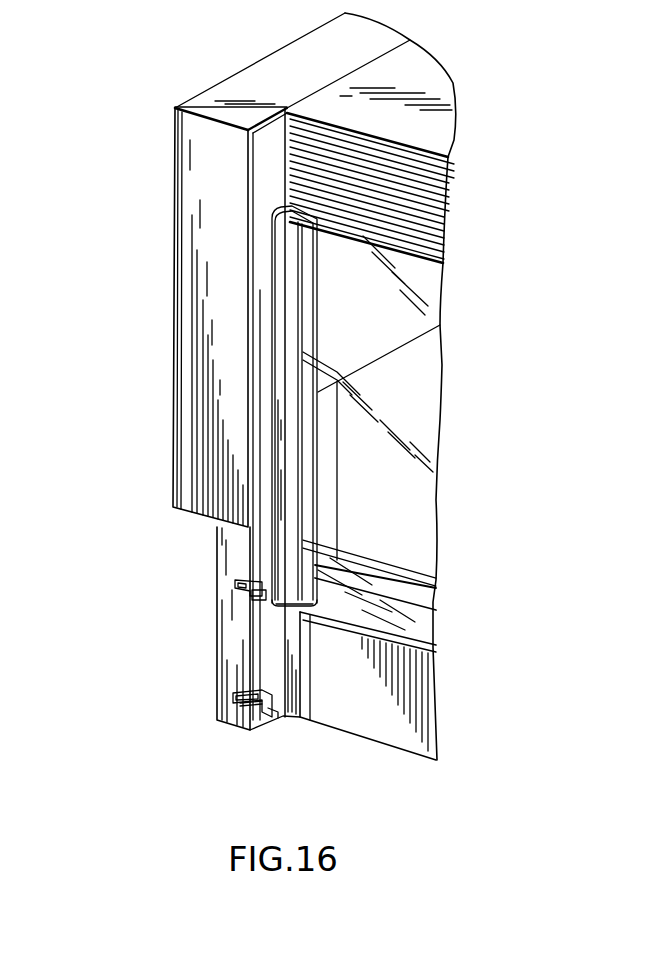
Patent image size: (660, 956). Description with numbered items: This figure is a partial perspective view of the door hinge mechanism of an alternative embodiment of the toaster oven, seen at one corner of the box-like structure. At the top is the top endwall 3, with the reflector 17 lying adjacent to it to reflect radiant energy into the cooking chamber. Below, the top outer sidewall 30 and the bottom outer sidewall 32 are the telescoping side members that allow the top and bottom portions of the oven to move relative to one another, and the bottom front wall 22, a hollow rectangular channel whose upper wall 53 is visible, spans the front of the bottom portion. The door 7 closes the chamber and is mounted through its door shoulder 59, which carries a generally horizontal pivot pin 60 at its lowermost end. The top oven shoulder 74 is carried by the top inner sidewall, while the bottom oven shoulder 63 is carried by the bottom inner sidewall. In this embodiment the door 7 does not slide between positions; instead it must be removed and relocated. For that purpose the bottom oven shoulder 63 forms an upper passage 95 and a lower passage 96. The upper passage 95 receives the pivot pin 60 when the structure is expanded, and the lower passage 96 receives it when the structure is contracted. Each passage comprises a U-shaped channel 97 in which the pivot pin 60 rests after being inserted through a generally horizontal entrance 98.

The top endwall 3 is at (453, 83).
The door 7 is at (442, 365).
The reflector 17 is at (448, 190).
The bottom front wall 22 is at (437, 733).
The top outer sidewall 30 is at (232, 75).
The bottom outer sidewall 32 is at (210, 540).
The upper wall 53 is at (398, 585).
The door shoulder 59 is at (275, 208).
The pivot pin 60 is at (262, 598).
The bottom oven shoulder 63 is at (225, 558).
The top oven shoulder 74 is at (270, 146).
The upper passage 95 is at (237, 585).
The lower passage 96 is at (233, 695).
The U-shaped channel 97 is at (277, 716).
The entrance 98 is at (243, 706).